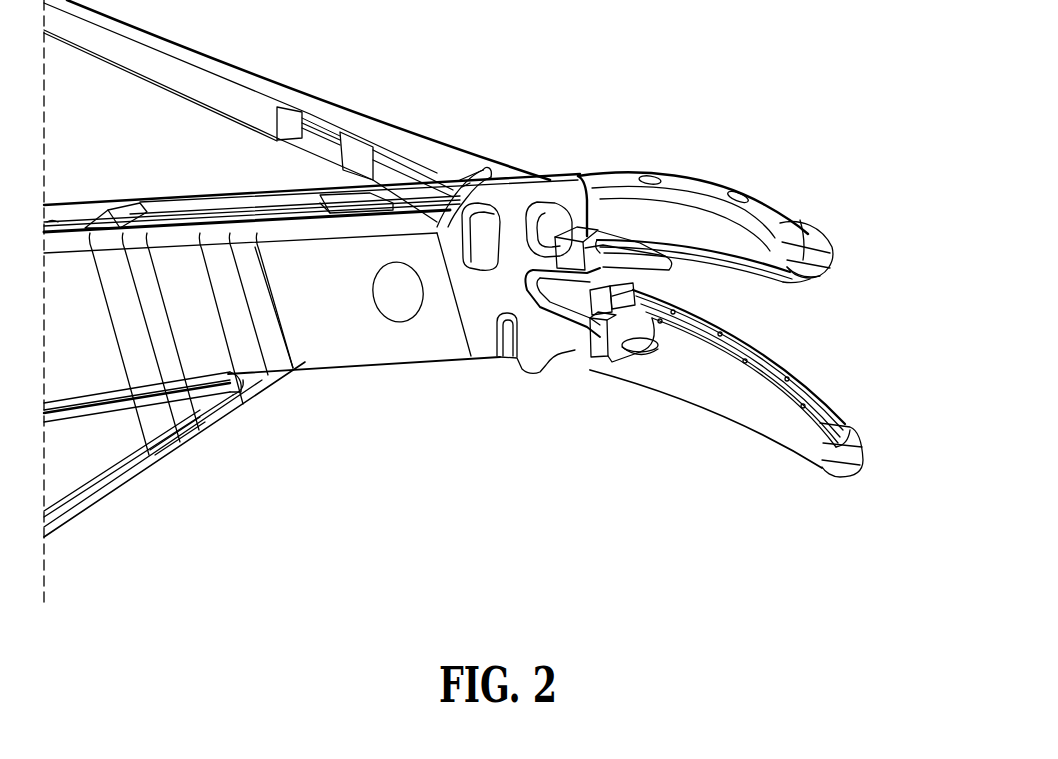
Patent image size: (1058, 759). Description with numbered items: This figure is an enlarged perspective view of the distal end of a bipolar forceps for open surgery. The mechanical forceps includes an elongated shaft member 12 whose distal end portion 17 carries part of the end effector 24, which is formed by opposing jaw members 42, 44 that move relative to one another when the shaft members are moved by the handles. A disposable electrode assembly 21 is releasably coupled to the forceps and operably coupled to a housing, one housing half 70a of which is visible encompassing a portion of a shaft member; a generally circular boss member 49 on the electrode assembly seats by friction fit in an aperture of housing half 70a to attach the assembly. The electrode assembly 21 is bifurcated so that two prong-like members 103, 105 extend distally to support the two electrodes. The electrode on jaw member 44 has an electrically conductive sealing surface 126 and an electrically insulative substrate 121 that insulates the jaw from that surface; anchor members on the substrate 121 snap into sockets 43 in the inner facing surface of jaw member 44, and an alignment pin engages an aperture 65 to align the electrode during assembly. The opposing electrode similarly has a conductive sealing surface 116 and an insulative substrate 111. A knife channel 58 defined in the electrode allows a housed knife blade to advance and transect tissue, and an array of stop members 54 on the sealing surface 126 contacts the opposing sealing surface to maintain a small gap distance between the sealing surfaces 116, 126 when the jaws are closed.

The elongated shaft member 12 is at (205, 63).
The distal end portion 17 is at (407, 150).
The disposable electrode assembly 21 is at (533, 377).
The end effector 24 is at (878, 327).
The jaw member 42 is at (729, 409).
The sockets 43 is at (665, 170).
The jaw member 44 is at (744, 196).
The boss member 49 is at (403, 303).
The stop members 54 is at (720, 333).
The knife channel 58 is at (837, 415).
The aperture 65 is at (805, 221).
The housing half 70a is at (317, 353).
The prong-like member 103 is at (586, 345).
The prong-like member 105 is at (563, 250).
The electrically insulative substrate 111 is at (860, 467).
The electrically conductive sealing surface 116 is at (798, 387).
The electrically insulative substrate 121 is at (833, 257).
The electrically conductive sealing surface 126 is at (787, 273).